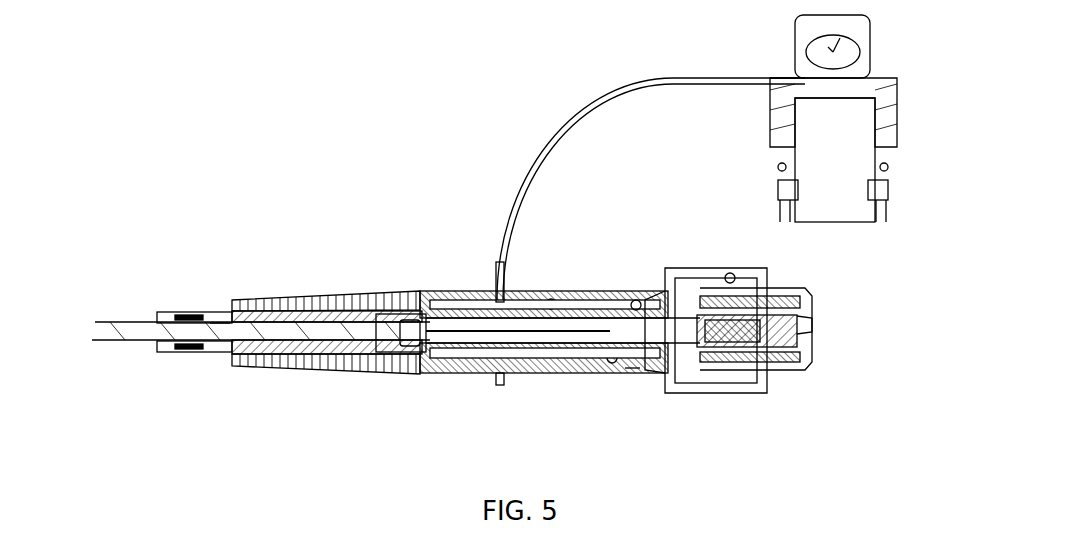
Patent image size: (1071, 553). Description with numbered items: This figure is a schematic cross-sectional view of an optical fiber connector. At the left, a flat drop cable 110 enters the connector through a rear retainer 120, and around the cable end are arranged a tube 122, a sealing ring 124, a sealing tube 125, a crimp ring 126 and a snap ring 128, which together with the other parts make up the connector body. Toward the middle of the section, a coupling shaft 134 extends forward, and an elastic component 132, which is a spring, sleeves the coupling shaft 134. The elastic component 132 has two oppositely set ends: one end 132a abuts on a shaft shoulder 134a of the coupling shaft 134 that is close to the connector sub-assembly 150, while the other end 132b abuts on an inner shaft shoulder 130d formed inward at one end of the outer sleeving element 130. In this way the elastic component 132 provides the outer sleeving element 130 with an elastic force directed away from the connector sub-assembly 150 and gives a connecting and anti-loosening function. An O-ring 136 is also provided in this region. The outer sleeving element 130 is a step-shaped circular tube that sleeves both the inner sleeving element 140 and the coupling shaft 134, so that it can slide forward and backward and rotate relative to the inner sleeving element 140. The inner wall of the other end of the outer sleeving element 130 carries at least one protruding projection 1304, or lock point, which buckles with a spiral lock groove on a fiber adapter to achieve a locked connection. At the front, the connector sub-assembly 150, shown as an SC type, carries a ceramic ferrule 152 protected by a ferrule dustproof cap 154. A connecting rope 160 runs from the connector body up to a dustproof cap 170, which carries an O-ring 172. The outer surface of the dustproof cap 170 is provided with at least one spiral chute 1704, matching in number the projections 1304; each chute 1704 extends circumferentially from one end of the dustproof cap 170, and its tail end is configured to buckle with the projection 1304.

The flat drop cable 110 is at (107, 318).
The rear retainer 120 is at (255, 368).
The tube 122 is at (162, 356).
The sealing ring 124 is at (183, 309).
The sealing tube 125 is at (226, 316).
The crimp ring 126 is at (356, 353).
The snap ring 128 is at (489, 357).
The outer sleeving element 130 is at (700, 266).
The projection 1304 is at (730, 272).
The inner shaft shoulder 130d is at (496, 296).
The elastic component 132 is at (586, 301).
The end of the elastic component 132a is at (618, 366).
The other end of the elastic component 132b is at (551, 300).
The coupling shaft 134 is at (525, 356).
The shaft shoulder 134a is at (626, 370).
The O-ring 136 is at (636, 301).
The inner sleeving element 140 is at (806, 289).
The connector sub-assembly 150 is at (745, 347).
The ceramic ferrule 152 is at (800, 343).
The ferrule dustproof cap 154 is at (815, 323).
The connecting rope 160 is at (522, 190).
The dustproof cap 170 is at (889, 102).
The chute 1704 is at (782, 164).
The O-ring 172 is at (890, 170).